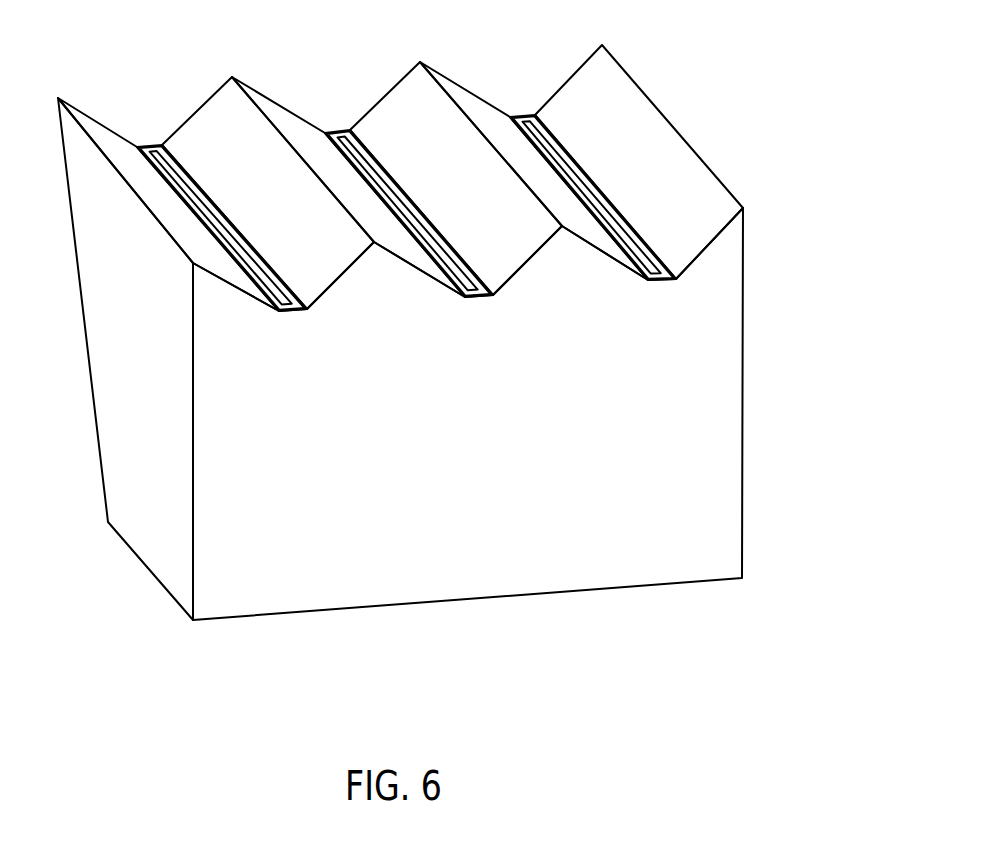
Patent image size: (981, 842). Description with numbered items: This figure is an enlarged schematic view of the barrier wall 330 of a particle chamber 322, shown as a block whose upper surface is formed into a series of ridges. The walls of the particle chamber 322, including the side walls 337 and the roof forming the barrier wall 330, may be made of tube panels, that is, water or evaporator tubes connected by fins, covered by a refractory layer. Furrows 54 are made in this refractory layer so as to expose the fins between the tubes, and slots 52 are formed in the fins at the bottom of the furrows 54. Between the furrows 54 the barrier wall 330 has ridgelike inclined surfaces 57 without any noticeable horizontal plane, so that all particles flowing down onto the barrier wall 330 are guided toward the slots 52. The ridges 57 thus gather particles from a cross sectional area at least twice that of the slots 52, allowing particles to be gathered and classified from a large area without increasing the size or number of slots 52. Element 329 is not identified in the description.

The particle chamber 322 is at (444, 320).
The left side face 329 is at (88, 368).
The side walls 337 is at (682, 445).
The ridgelike inclined surfaces 57 is at (218, 132).
The furrows 54 is at (340, 128).
The slots 52 is at (537, 134).
The barrier wall 330 is at (637, 143).